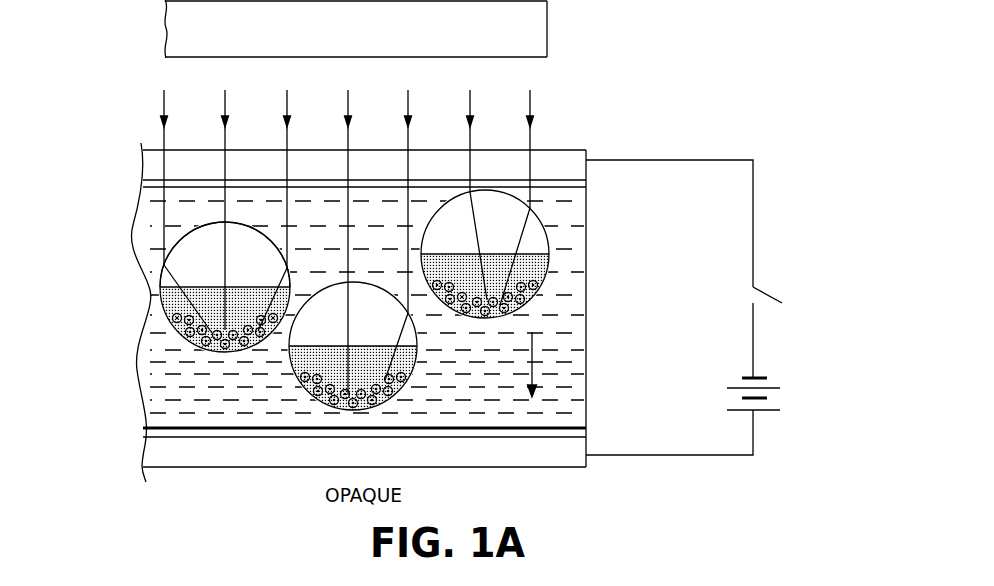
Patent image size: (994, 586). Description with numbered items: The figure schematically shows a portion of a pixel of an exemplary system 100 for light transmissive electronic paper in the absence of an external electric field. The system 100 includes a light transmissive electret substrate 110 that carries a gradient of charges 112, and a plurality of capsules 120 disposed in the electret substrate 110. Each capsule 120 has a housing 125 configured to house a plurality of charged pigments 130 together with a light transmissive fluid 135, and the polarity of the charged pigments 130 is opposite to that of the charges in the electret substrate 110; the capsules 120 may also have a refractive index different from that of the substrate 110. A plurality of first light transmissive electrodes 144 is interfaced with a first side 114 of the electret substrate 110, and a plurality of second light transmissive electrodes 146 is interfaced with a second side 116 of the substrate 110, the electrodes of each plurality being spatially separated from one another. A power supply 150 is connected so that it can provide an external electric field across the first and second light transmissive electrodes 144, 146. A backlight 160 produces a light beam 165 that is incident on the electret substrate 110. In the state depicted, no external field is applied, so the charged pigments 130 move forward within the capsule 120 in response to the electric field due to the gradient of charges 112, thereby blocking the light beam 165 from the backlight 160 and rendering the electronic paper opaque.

The system for electronic paper 100 is at (698, 106).
The light transmissive electret substrate 110 is at (611, 344).
The gradient of charges 112 is at (532, 372).
The first side 114 is at (148, 424).
The second side 116 is at (145, 190).
The capsule 120 is at (145, 278).
The housing 125 is at (158, 307).
The charged pigments 130 is at (188, 338).
The light transmissive fluid 135 is at (188, 262).
The first light transmissive electrodes 144 is at (162, 452).
The second light transmissive electrodes 146 is at (147, 162).
The power supply 150 is at (703, 307).
The backlight 160 is at (377, 36).
The light beam 165 is at (128, 110).